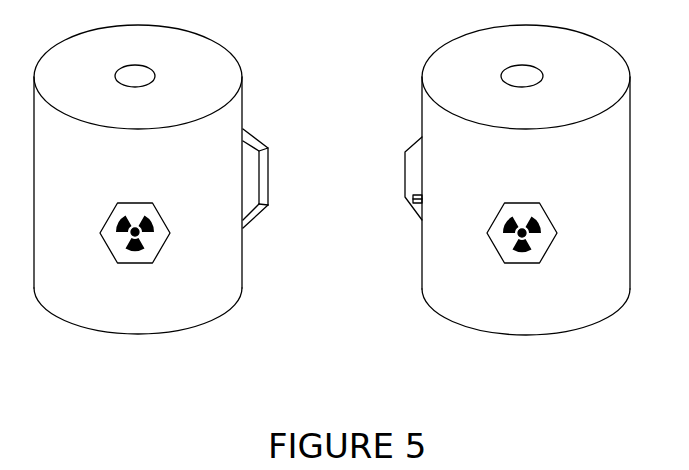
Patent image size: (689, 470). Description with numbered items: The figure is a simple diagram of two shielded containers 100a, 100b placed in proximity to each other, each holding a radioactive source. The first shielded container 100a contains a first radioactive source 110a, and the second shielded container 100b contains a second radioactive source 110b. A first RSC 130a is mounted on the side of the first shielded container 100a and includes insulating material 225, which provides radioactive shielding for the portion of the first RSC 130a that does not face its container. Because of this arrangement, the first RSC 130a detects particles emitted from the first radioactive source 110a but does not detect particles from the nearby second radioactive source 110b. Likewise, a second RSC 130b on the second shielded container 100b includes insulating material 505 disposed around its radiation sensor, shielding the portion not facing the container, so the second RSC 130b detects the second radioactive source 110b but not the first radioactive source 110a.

The first shielded container 100a is at (158, 161).
The second shielded container 100b is at (563, 159).
The first radioactive source 110a is at (148, 237).
The second radioactive source 110b is at (535, 238).
The first RSC 130a is at (262, 143).
The second RSC 130b is at (416, 153).
The insulating material 225 is at (262, 205).
The insulating material 505 is at (412, 197).